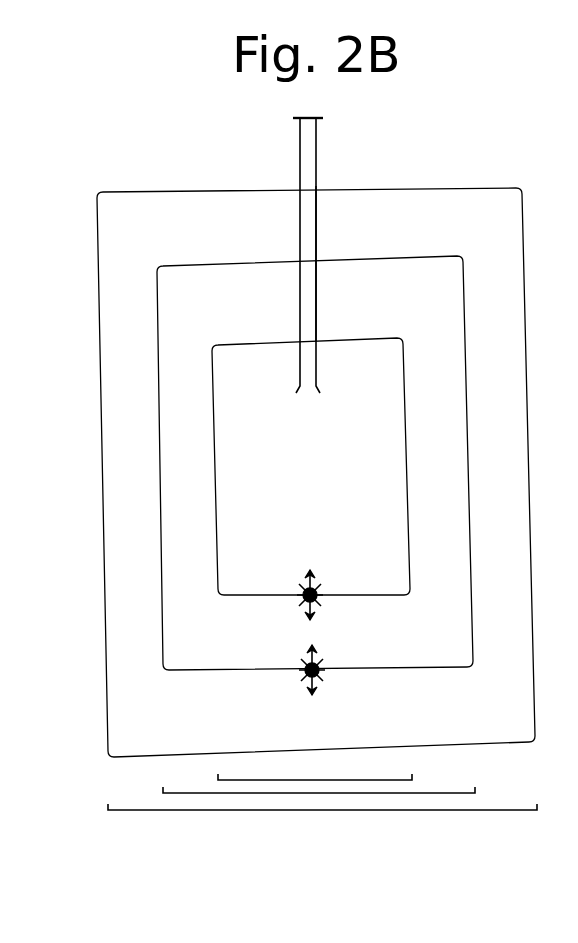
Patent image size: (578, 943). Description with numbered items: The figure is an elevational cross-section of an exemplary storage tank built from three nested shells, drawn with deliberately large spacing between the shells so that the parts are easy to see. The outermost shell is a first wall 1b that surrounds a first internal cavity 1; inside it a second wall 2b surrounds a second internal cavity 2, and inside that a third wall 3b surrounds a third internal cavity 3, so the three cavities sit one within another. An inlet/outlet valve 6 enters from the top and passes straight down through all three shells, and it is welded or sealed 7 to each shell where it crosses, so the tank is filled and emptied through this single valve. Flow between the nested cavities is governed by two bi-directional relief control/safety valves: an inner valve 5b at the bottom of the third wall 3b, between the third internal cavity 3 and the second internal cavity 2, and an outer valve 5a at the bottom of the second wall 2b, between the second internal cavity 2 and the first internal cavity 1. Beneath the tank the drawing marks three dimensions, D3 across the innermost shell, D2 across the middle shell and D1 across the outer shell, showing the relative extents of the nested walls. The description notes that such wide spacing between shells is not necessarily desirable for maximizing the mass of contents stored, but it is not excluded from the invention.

The first internal cavity 1 is at (292, 457).
The second internal cavity 2 is at (261, 427).
The third internal cavity 3 is at (230, 403).
The first wall 1b is at (152, 192).
The second wall 2b is at (157, 267).
The third wall 3b is at (212, 345).
The outer bi-directional control/safety valve 5a is at (296, 669).
The inner bi-directional control/safety valve 5b is at (295, 595).
The inlet/outlet valve 6 is at (315, 254).
The weld/seal 7 is at (317, 341).
The width of first region D1 is at (331, 797).
The width of second region D2 is at (330, 781).
The width of third region D3 is at (328, 770).